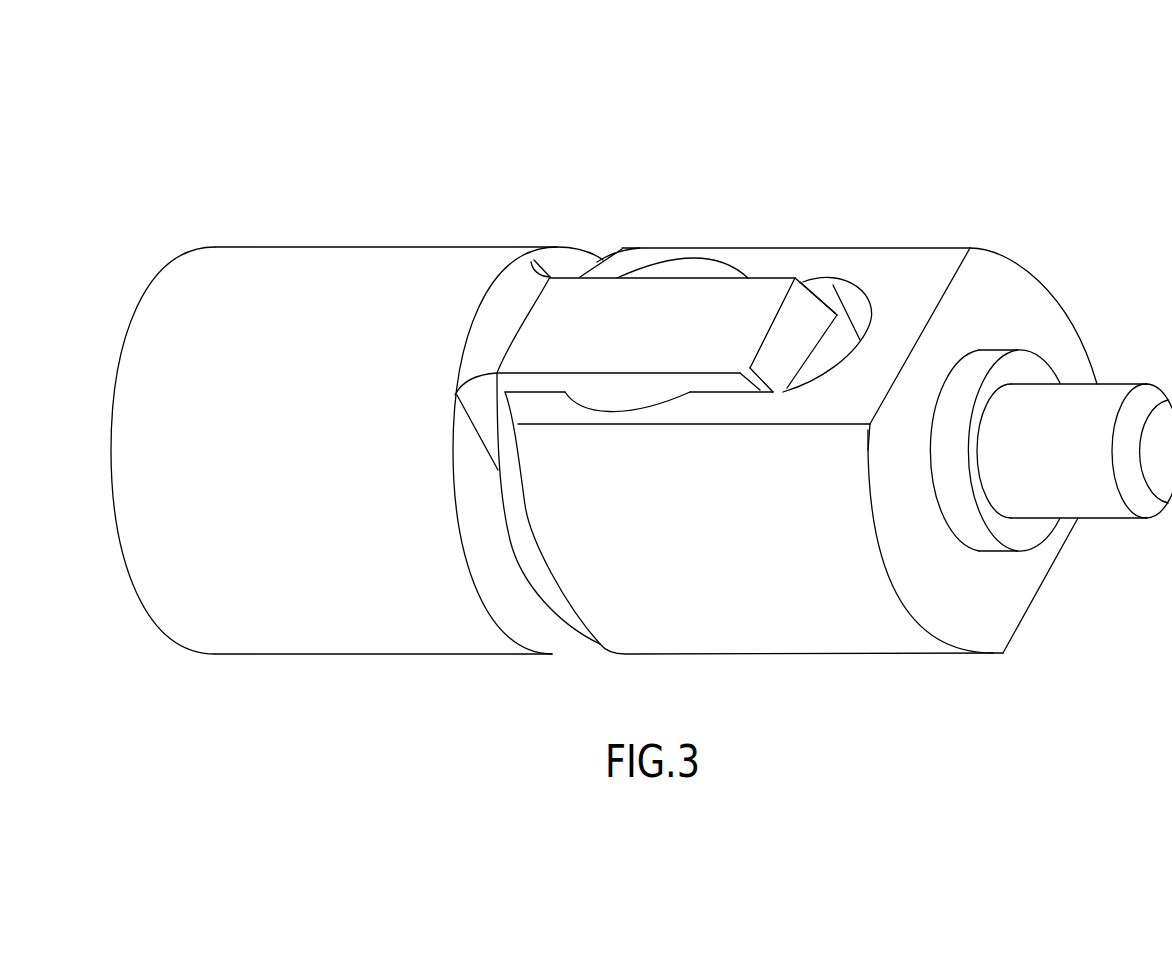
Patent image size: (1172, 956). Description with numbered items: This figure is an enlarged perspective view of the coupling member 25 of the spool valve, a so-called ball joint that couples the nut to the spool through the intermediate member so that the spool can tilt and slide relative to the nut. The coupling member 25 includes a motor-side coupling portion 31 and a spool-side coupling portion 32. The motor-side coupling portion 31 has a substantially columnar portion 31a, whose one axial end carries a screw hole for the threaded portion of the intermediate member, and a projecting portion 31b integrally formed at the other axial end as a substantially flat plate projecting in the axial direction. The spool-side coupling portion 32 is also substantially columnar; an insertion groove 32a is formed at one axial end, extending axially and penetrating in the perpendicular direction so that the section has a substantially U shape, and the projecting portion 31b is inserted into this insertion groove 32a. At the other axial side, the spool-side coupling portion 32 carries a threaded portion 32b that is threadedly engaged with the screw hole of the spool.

The coupling member 25 is at (1041, 136).
The motor-side coupling portion 31 is at (441, 192).
The columnar portion 31a is at (335, 268).
The projecting portion 31b is at (680, 295).
The spool-side coupling portion 32 is at (811, 192).
The insertion groove 32a is at (720, 385).
The threaded portion 32b is at (1105, 395).